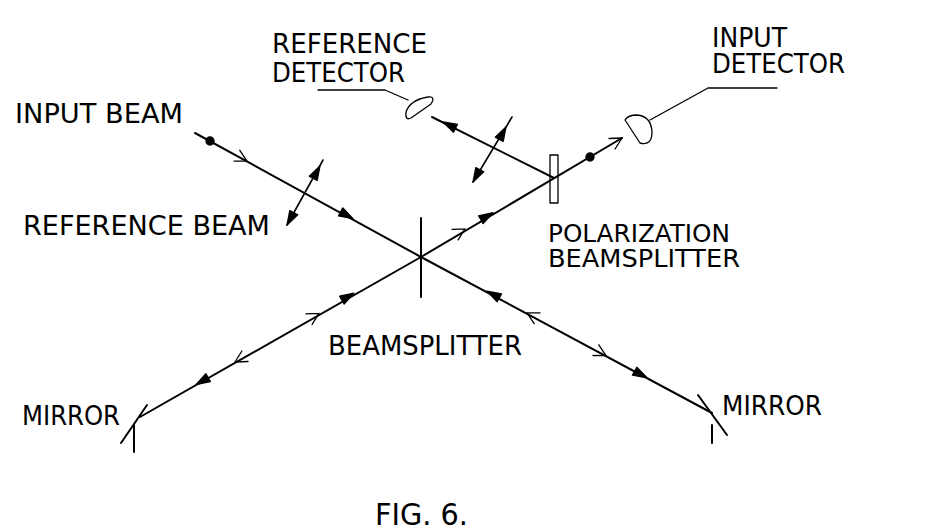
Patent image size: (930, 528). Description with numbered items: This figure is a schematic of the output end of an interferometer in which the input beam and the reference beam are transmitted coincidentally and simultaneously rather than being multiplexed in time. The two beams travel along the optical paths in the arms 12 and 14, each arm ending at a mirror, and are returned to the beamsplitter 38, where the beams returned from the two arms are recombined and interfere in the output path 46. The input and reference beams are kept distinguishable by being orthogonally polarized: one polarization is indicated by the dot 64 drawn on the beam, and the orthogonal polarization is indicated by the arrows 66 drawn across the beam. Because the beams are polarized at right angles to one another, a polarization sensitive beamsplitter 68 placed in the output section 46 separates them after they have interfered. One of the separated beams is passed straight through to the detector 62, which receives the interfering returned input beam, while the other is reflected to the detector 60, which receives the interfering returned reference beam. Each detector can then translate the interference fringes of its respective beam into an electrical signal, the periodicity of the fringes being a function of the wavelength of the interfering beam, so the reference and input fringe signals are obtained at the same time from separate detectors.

The arm 12 is at (568, 335).
The arm 14 is at (277, 340).
The beamsplitter 38 is at (421, 275).
The output path 46 is at (468, 222).
The detector 60 is at (427, 99).
The detector 62 is at (652, 138).
The dot 64 is at (212, 139).
The arrows 66 is at (318, 167).
The polarization sensitive beamsplitter 68 is at (559, 196).